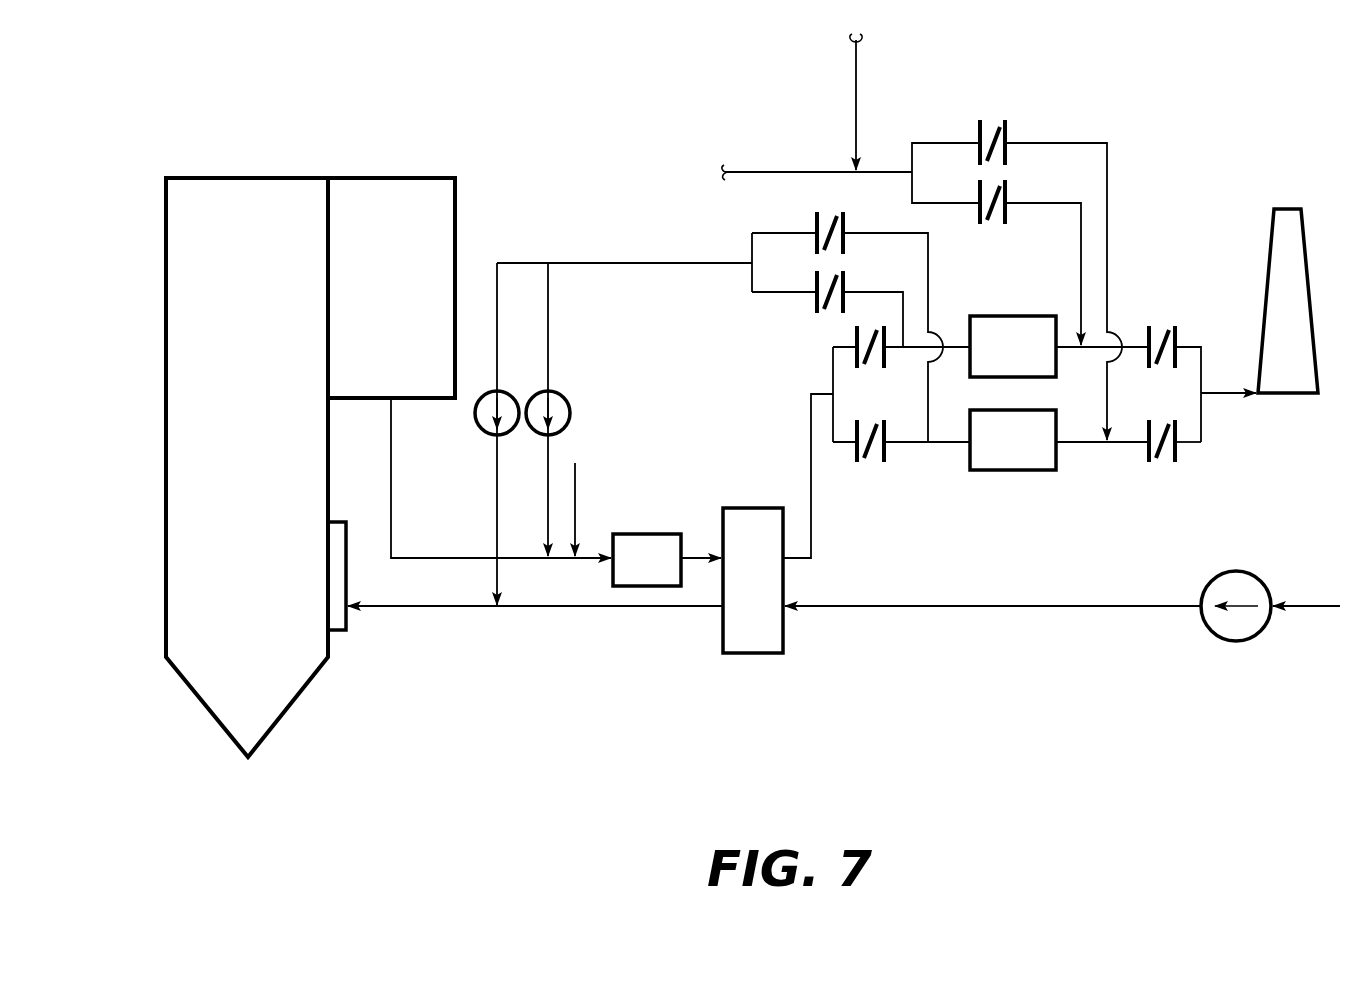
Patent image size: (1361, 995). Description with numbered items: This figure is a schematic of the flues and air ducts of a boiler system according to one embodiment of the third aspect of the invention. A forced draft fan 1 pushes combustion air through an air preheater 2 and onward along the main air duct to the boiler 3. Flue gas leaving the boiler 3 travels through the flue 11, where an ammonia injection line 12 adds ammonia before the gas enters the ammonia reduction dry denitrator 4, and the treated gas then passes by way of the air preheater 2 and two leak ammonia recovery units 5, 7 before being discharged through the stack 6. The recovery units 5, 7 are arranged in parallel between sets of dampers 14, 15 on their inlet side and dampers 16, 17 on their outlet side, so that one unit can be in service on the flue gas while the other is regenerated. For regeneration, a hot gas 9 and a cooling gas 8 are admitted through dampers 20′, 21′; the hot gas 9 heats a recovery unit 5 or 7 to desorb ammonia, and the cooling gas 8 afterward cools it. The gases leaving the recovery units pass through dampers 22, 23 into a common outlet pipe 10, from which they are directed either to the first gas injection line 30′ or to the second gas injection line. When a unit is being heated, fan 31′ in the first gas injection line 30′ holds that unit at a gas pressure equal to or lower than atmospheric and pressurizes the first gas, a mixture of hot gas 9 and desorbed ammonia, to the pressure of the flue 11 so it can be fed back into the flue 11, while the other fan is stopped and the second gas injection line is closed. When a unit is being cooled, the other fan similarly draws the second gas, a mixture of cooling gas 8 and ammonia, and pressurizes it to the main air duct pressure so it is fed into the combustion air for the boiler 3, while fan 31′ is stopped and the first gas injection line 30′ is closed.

The forced draft fan 1 is at (1258, 580).
The air preheater 2 is at (747, 655).
The boiler 3 is at (340, 178).
The ammonia reduction dry denitrator 4 is at (636, 534).
The leak ammonia recovery unit 5 is at (1005, 472).
The stack 6 is at (1302, 393).
The leak ammonia recovery unit 7 is at (1005, 314).
The cooling gas 8 is at (858, 75).
The hot gas 9 is at (806, 170).
The outlet pipe 10 is at (668, 265).
The flue 11 is at (556, 560).
The ammonia injection line 12 is at (577, 495).
The damper 14 is at (856, 450).
The damper 15 is at (870, 366).
The damper 16 is at (1146, 452).
The damper 17 is at (1178, 330).
The damper 20′ is at (1008, 190).
The damper 21′ is at (1008, 131).
The damper 22 is at (815, 296).
The damper 23 is at (815, 242).
The first gas injection line 30′ is at (550, 360).
The fan 31′ is at (570, 408).